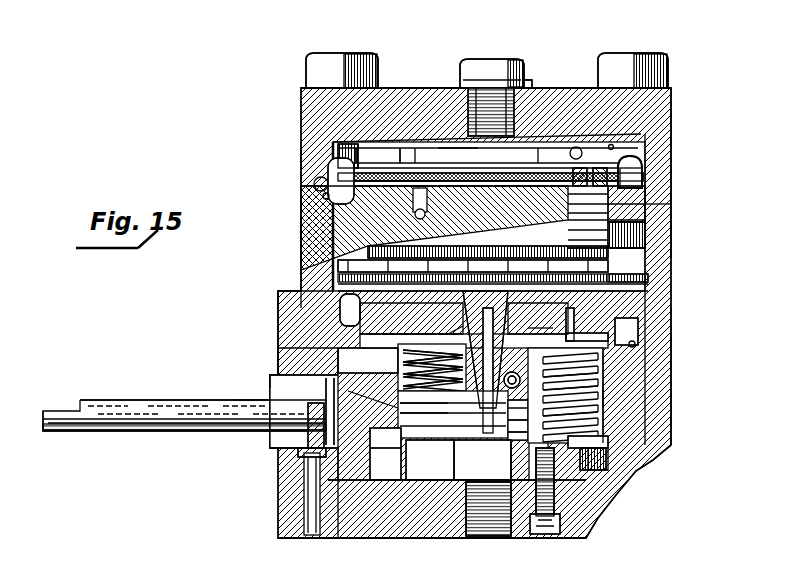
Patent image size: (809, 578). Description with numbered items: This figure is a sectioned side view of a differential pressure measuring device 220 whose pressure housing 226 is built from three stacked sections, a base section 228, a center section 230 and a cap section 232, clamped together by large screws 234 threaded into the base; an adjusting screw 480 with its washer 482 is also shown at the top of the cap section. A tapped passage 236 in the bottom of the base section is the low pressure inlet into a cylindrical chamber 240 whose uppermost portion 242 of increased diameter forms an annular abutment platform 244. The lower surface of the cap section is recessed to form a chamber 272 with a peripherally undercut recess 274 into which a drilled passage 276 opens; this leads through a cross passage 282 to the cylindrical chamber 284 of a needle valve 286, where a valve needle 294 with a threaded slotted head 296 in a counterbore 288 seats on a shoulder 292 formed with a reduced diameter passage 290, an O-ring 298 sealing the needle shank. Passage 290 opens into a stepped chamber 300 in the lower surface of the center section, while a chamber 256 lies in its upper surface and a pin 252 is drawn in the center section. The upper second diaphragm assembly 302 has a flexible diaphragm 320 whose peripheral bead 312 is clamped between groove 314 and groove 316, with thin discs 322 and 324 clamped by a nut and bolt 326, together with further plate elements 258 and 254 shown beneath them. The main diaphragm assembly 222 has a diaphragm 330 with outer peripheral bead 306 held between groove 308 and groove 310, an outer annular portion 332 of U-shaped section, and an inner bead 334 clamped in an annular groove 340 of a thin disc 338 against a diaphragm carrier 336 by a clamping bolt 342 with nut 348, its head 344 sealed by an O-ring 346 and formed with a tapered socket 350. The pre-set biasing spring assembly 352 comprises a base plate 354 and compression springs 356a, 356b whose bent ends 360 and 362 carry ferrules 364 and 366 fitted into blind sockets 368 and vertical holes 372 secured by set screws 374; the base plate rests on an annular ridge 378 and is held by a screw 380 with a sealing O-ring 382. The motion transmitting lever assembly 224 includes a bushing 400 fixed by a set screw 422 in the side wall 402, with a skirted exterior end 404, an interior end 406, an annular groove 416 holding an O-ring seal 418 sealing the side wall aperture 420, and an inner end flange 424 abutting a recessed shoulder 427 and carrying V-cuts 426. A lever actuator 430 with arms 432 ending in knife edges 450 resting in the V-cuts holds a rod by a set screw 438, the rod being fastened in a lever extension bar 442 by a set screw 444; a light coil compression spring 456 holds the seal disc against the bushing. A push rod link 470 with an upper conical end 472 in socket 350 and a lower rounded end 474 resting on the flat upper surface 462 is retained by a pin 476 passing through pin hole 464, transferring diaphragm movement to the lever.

The large screws 234 is at (312, 60).
The adjusting screw 480 is at (495, 60).
The lock washer 482 is at (521, 78).
The cap section 232 is at (655, 108).
The peripherally undercut recess 274 is at (330, 138).
The differential pressure measuring device 220 is at (262, 172).
The groove 316 is at (320, 170).
The peripheral bead 312 is at (308, 178).
The groove 314 is at (316, 190).
The diaphragm 320 is at (352, 156).
The thin disc 324 is at (422, 156).
The nut and bolt 326 is at (459, 156).
The drilled passage 276 is at (565, 140).
The chamber 272 is at (602, 136).
The second diaphragm assembly 302 is at (638, 152).
The O-ring 298 is at (612, 168).
The pressure housing 226 is at (668, 182).
The lower plate 258 is at (380, 178).
The backing plate 254 is at (416, 178).
The thin disc 322 is at (440, 176).
The reduced diameter coaxial passage 290 is at (518, 197).
The shoulder 292 is at (544, 178).
The cross passage 282 is at (572, 178).
The cylindrical chamber 284 is at (600, 178).
The valve needle 294 is at (634, 204).
The enlarged threaded and slotted head 296 is at (664, 200).
The needle valve 286 is at (684, 223).
The threaded coaxial counterbore 288 is at (640, 232).
The center section 230 is at (640, 252).
The chamber 256 is at (434, 211).
The pin 252 is at (415, 205).
The stepped recess or chamber 300 is at (471, 251).
The diaphragm 330 is at (456, 269).
The groove 310 is at (295, 282).
The blind sockets 368 is at (634, 277).
The upper conical end 472 is at (485, 282).
The peripheral bead 306 is at (294, 302).
The groove 308 is at (312, 309).
The outer annular portion 332 is at (308, 339).
The thin disc 338 is at (363, 310).
The annular peripheral bead 334 is at (411, 316).
The O-ring 346 is at (413, 324).
The nut 348 is at (455, 322).
The clamping bolt 342 is at (537, 318).
The annular groove 340 is at (530, 318).
The spring end 360 is at (588, 322).
The upper spring end ferrule 364 is at (588, 331).
The diaphragm assembly 222 is at (640, 316).
The uppermost portion 242 is at (628, 334).
The base section 228 is at (650, 352).
The motion transmitting lever assembly 224 is at (266, 325).
The side wall 402 is at (278, 345).
The interior end 406 is at (332, 352).
The diaphragm carrier 336 is at (361, 360).
The compression spring 356a is at (412, 360).
The V-cuts 426 is at (386, 378).
The annular abutment platform 244 is at (597, 350).
The compression spring 356b is at (590, 381).
The pre-set biasing spring assembly 352 is at (600, 395).
The cylindrical chamber 240 is at (592, 410).
The vertical holes 372 is at (599, 438).
The spring end 362 is at (580, 450).
The set screws 374 is at (590, 452).
The set screw 444 is at (245, 382).
The side wall aperture 420 is at (266, 377).
The O-ring seal 418 is at (320, 382).
The annular groove 416 is at (326, 398).
The knife edges 450 is at (330, 408).
The lever extension bar 442 is at (168, 420).
The skirted exterior end 404 is at (266, 428).
The bushing 400 is at (270, 446).
The set screw 422 is at (290, 468).
The set screw 438 is at (372, 399).
The push rod link 470 is at (466, 386).
The arms 432 is at (424, 419).
The lower rounded end 474 is at (474, 408).
The flat upper surface 462 is at (486, 380).
The pin hole 464 is at (490, 402).
The base plate 354 is at (513, 432).
The tapered socket 350 is at (519, 381).
The head 344 is at (520, 374).
The inner end flange 424 is at (364, 426).
The light coil compression spring 456 is at (355, 440).
The annular ridge 378 is at (388, 464).
The lever actuator 430 is at (430, 460).
The pin 476 is at (482, 460).
The recessed shoulder 427 is at (356, 509).
The passage 236 is at (456, 494).
The sealing O-ring 382 is at (488, 509).
The lower spring end ferrule 366 is at (559, 482).
The screw 380 is at (552, 506).